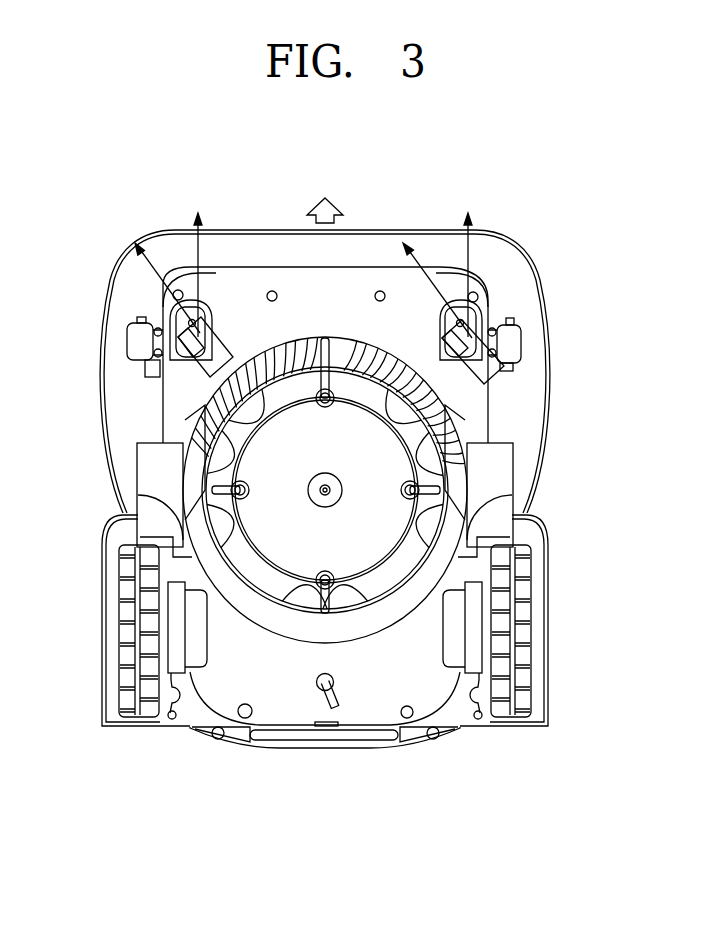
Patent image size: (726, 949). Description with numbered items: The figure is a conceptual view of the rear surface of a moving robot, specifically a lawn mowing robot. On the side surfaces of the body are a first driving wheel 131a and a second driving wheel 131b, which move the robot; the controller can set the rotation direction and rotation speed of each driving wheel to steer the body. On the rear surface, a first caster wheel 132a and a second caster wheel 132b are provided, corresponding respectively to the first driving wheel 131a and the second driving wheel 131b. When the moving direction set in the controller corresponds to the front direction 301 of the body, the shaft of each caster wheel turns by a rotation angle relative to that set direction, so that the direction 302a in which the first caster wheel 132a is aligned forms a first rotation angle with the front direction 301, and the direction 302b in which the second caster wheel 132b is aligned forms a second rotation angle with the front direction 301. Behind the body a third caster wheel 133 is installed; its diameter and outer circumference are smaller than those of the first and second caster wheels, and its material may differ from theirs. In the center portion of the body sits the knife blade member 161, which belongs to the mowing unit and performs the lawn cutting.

The front direction 301 is at (334, 201).
The direction in which the first caster wheel is aligned 302a is at (422, 274).
The direction in which the second caster wheel is aligned 302b is at (145, 276).
The first driving wheel 131a is at (523, 579).
The second driving wheel 131b is at (128, 615).
The first caster wheel 132a is at (478, 348).
The second caster wheel 132b is at (212, 372).
The third caster wheel 133 is at (335, 708).
The knife blade member 161 is at (460, 375).